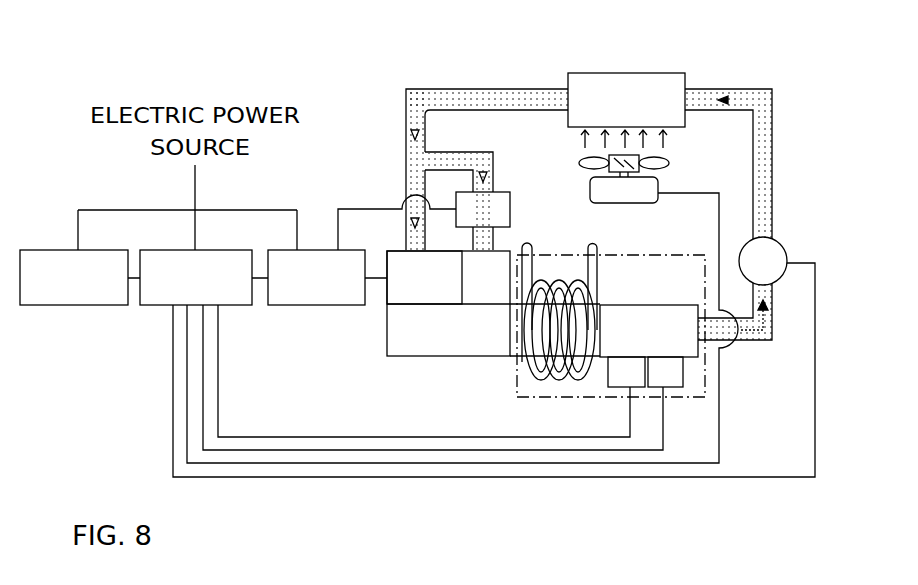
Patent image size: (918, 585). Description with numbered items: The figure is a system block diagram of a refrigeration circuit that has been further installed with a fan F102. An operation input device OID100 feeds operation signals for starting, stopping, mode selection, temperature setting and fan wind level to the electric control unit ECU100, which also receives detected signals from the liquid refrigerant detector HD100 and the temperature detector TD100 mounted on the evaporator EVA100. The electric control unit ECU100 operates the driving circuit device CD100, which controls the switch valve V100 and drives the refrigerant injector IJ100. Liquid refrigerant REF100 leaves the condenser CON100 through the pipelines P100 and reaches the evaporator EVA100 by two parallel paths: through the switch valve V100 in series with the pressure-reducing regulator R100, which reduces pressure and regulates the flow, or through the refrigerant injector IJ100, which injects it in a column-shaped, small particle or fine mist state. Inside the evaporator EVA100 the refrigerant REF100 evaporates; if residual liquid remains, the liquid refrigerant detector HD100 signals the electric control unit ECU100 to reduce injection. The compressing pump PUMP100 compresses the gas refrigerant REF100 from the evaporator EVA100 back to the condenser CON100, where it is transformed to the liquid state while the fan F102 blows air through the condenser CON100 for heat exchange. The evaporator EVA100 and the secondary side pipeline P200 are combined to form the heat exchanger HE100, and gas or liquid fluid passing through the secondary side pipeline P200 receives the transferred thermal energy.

The operation input device OID100 is at (74, 277).
The electric control unit ECU100 is at (196, 277).
The driving circuit device CD100 is at (316, 277).
The refrigerant injector IJ100 is at (424, 277).
The pressure-reducing regulator R100 is at (482, 290).
The pipelines P100 is at (405, 158).
The switch valve V100 is at (500, 207).
The condenser CON100 is at (626, 100).
The fan F102 is at (650, 185).
The refrigerant REF100 is at (763, 182).
The compressing pump PUMP100 is at (768, 253).
The heat exchanger HE100 is at (615, 255).
The secondary side pipeline P200 is at (532, 273).
The evaporator EVA100 is at (649, 331).
The liquid refrigerant detector HD100 is at (618, 377).
The temperature detector TD100 is at (668, 368).